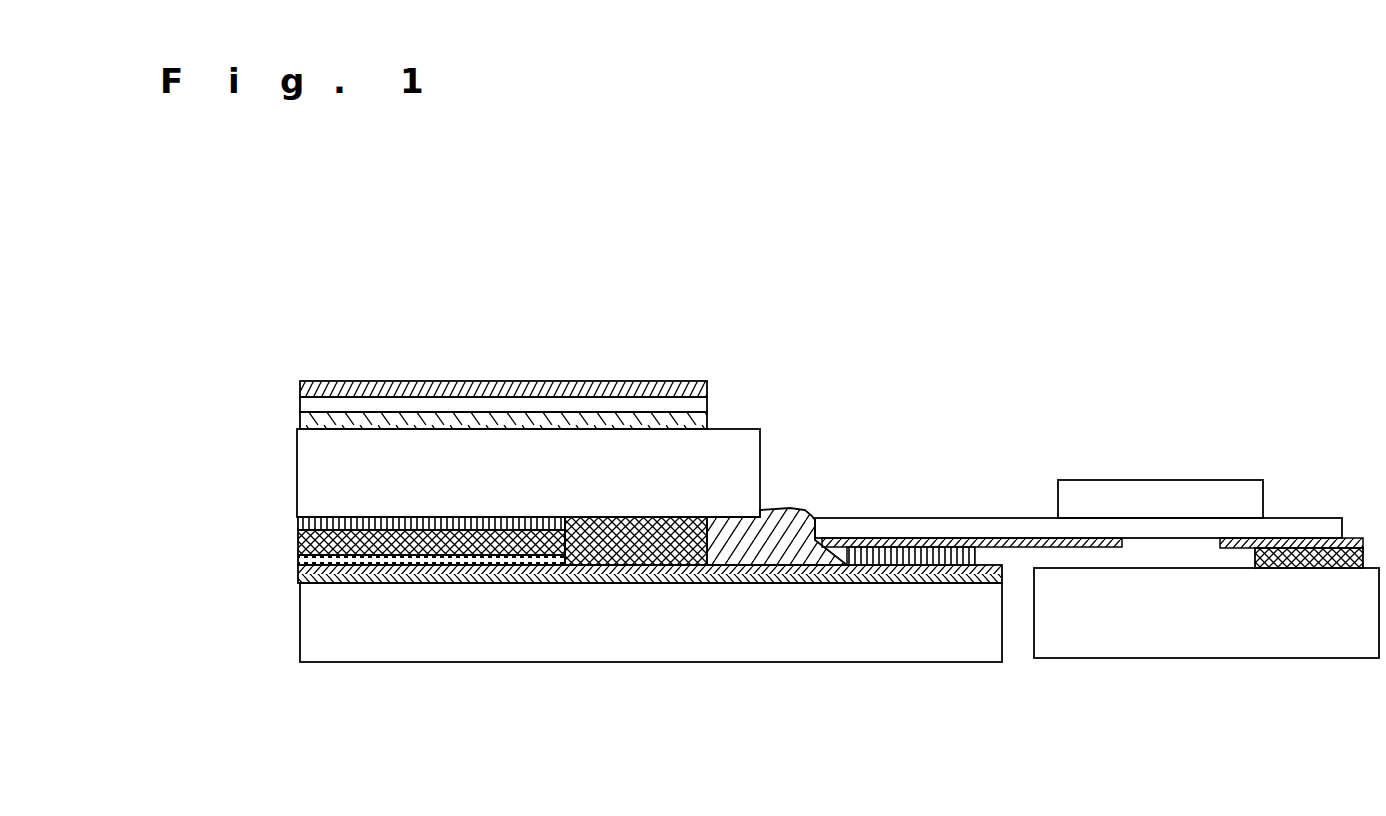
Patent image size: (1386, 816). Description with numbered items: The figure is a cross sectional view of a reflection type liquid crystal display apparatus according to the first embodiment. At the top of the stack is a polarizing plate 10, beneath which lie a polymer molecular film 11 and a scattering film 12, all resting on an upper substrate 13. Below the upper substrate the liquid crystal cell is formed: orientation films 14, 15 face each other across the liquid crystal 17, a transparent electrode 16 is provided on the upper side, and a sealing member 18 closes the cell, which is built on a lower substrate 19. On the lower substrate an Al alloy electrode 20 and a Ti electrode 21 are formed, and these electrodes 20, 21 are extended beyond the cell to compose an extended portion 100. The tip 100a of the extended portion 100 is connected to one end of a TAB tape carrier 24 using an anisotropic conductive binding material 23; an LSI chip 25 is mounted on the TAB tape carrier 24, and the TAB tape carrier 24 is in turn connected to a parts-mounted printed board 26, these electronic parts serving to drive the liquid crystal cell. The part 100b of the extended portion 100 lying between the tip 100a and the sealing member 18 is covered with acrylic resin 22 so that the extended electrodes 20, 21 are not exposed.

The polarizing plate 10 is at (468, 385).
The polymer molecular film 11 is at (567, 402).
The scattering film 12 is at (668, 418).
The upper substrate 13 is at (337, 455).
The orientation film 14 is at (418, 518).
The orientation film 15 is at (300, 572).
The transparent electrode 16 is at (302, 515).
The liquid crystal 17 is at (297, 548).
The sealing member 18 is at (595, 552).
The lower substrate 19 is at (592, 612).
The Al alloy electrode 20 is at (375, 583).
The Ti electrode 21 is at (445, 583).
The acrylic resin 22 is at (776, 530).
The anisotropic conductive binding material 23 is at (878, 560).
The TAB tape carrier 24 is at (920, 523).
The LSI chip 25 is at (1133, 490).
The printed board 26 is at (1198, 610).
The extended portion 100 is at (625, 603).
The tip 100a is at (908, 584).
The part of the extended portion 100b is at (682, 584).